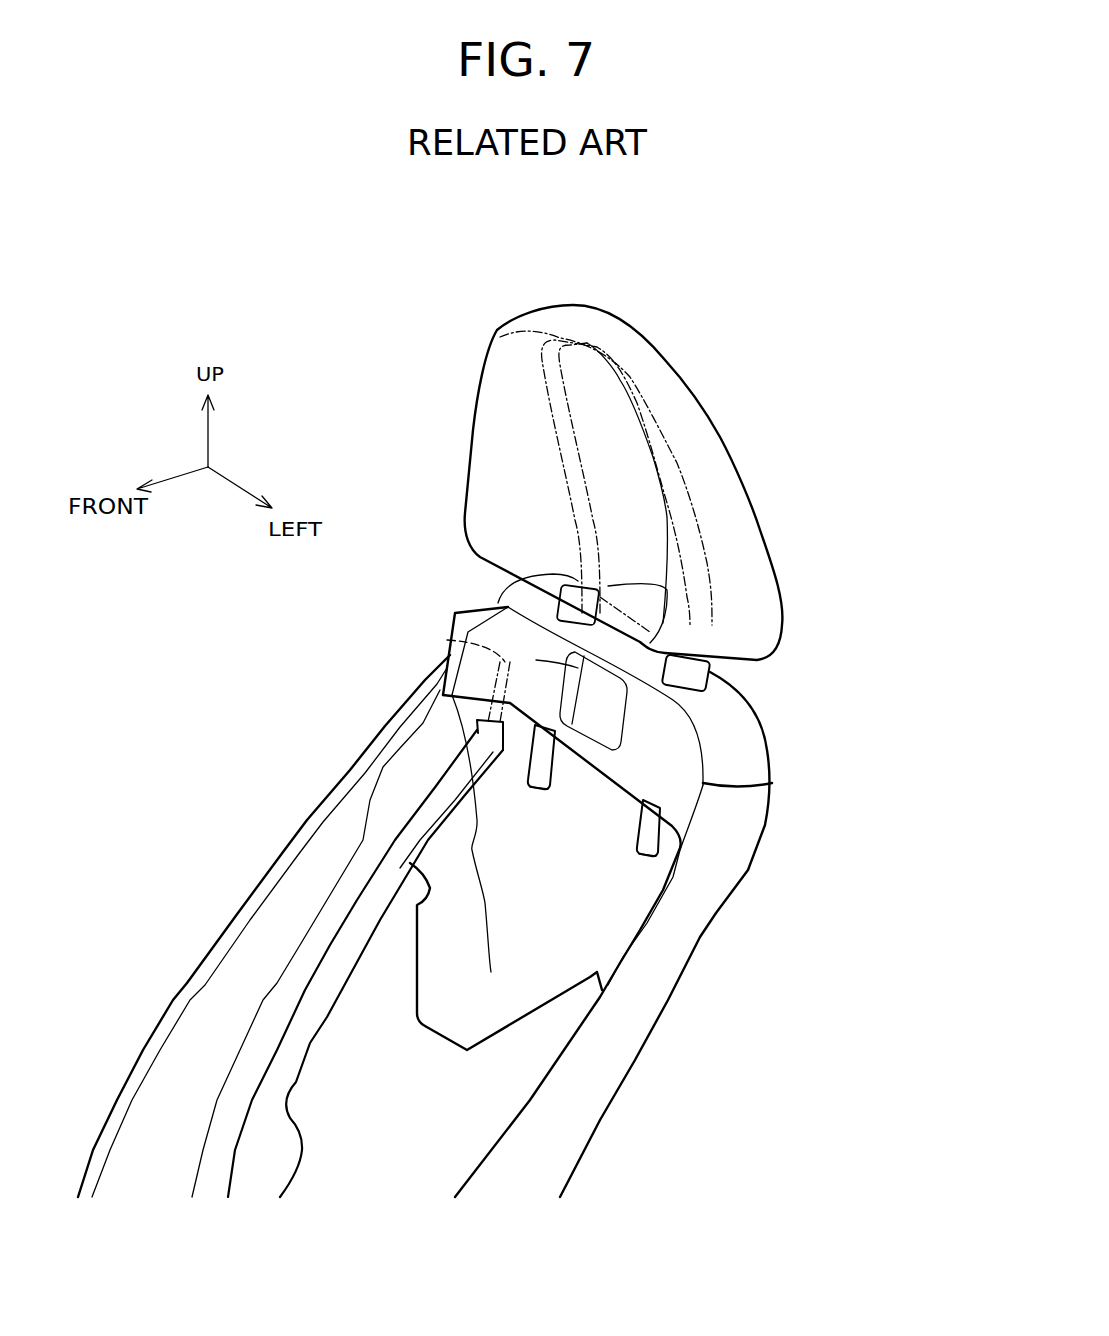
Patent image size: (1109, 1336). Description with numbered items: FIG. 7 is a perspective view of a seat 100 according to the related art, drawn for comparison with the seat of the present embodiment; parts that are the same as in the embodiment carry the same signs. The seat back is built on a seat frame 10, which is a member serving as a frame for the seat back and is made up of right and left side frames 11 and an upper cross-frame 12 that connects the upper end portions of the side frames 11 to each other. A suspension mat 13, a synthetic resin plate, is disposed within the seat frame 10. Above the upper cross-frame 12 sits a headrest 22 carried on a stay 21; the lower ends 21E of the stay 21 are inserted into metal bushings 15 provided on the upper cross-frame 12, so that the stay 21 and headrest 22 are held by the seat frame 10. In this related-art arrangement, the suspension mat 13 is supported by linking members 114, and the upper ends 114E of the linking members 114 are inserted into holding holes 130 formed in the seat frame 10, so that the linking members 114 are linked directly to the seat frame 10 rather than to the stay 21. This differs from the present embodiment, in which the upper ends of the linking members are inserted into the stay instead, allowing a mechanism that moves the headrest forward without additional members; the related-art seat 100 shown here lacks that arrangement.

The seat 100 is at (857, 214).
The headrest 22 is at (610, 335).
The stay 21 is at (638, 428).
The lower ends of the stay 21E is at (643, 856).
The metal bushings 15 is at (493, 605).
The seat frame 10 is at (927, 748).
The upper cross-frame 12 is at (750, 755).
The side frames 11 is at (320, 810).
The linking members 114 is at (637, 930).
The upper ends of the linking members 114E is at (447, 640).
The holding holes 130 is at (475, 728).
The suspension mat 13 is at (402, 1163).